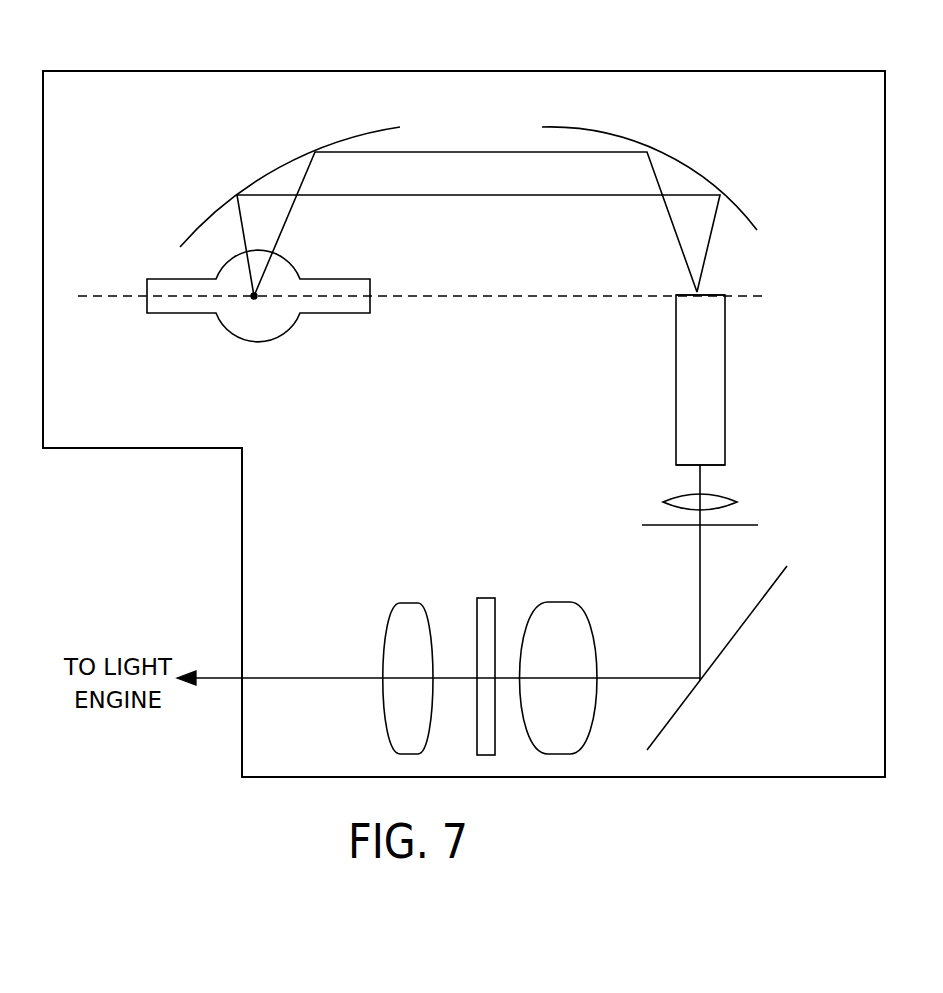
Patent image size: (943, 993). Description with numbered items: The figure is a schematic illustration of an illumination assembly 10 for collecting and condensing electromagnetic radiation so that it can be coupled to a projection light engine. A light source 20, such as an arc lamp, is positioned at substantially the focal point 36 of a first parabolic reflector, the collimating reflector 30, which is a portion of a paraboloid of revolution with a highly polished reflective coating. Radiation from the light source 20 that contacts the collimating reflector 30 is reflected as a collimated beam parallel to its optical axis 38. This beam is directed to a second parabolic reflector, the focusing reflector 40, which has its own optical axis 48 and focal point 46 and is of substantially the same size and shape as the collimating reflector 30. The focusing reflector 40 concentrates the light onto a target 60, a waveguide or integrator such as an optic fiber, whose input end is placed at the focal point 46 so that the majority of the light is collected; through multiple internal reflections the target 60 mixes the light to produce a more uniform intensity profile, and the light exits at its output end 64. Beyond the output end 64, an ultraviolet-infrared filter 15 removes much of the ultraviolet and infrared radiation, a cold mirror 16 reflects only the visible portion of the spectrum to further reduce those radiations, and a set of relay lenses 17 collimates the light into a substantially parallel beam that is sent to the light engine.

The illumination assembly 10 is at (220, 71).
The ultraviolet-infrared (UV-IR) filter 15 is at (624, 490).
The cold mirror 16 is at (745, 618).
The relay lenses 17 is at (410, 603).
The light source 20 is at (205, 313).
The collimating reflector 30 is at (300, 157).
The focal point 36 is at (250, 296).
The optical axis 38 is at (385, 296).
The focusing reflector 40 is at (673, 158).
The focal point 46 is at (693, 290).
The optical axis 48 is at (549, 296).
The target 60 is at (725, 345).
The output end 64 is at (717, 292).